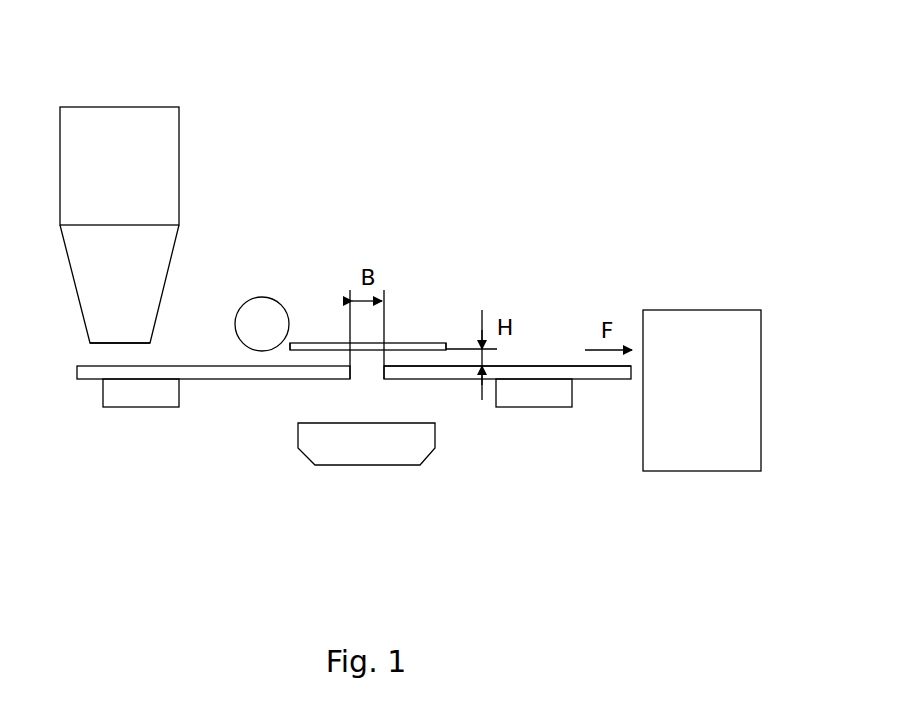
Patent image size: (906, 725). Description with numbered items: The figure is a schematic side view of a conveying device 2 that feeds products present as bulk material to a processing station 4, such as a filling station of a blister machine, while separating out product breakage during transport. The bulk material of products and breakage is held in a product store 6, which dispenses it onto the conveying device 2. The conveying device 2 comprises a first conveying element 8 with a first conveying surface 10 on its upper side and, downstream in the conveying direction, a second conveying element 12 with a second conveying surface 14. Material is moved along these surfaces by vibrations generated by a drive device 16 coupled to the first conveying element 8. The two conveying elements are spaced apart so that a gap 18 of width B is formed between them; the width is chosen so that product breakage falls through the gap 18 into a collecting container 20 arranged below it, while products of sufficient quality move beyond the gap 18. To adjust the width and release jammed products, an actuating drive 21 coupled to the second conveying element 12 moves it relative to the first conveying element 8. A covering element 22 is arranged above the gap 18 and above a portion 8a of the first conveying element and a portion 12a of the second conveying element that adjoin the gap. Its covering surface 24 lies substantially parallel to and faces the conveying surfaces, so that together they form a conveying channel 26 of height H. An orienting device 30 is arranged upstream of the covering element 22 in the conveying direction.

The conveying device 2 is at (561, 135).
The processing station 4 is at (690, 340).
The product store 6 is at (118, 133).
The first conveying element 8 is at (213, 375).
The portion of the first conveying element 8a is at (315, 375).
The first conveying surface 10 is at (183, 366).
The second conveying element 12 is at (597, 372).
The portion of the second conveying element 12a is at (413, 373).
The second conveying surface 14 is at (538, 365).
The drive device 16 is at (132, 397).
The gap 18 is at (367, 373).
The collecting container 20 is at (335, 451).
The actuating drive 21 is at (517, 398).
The covering element 22 is at (446, 343).
The covering surface 24 is at (435, 343).
The conveying channel 26 is at (315, 360).
The orienting device 30 is at (273, 275).